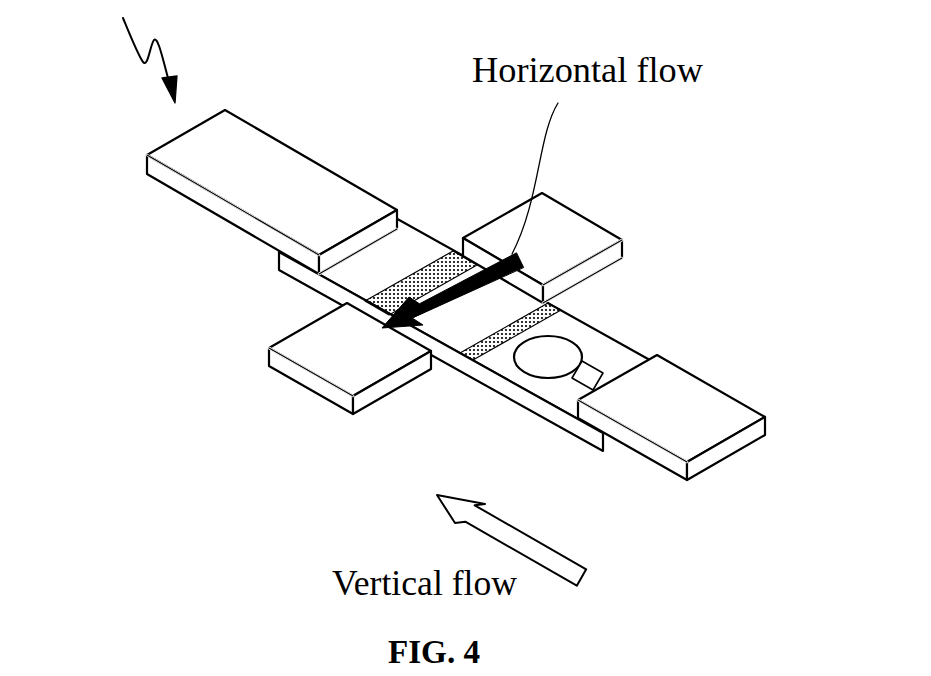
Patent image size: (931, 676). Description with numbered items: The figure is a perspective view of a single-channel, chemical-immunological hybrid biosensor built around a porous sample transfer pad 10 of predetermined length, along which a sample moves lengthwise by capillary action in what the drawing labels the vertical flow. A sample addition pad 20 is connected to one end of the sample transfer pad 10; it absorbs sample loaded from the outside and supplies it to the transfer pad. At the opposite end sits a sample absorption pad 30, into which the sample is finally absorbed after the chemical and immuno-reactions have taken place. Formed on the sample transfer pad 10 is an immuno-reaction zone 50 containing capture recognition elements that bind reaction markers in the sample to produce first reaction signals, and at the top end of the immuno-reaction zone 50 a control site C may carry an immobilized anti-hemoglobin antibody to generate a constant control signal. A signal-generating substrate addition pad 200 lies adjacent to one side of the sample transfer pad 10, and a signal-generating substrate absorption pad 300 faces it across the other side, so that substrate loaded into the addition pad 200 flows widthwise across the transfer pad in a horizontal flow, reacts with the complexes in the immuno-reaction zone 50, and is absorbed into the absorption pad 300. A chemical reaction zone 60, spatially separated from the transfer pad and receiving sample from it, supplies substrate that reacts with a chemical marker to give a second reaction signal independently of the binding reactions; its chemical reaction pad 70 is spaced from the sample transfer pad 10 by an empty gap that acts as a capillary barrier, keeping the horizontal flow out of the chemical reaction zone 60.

The sample transfer pad 10 is at (410, 247).
The sample addition pad 20 is at (688, 395).
The sample absorption pad 30 is at (300, 165).
The immuno-reaction zone 50 is at (550, 320).
The chemical reaction zone 60 is at (538, 368).
The chemical reaction pad 70 is at (594, 381).
The signal-generating substrate addition pad 200 is at (578, 238).
The signal-generating substrate absorption pad 300 is at (303, 350).
The control site C is at (373, 292).